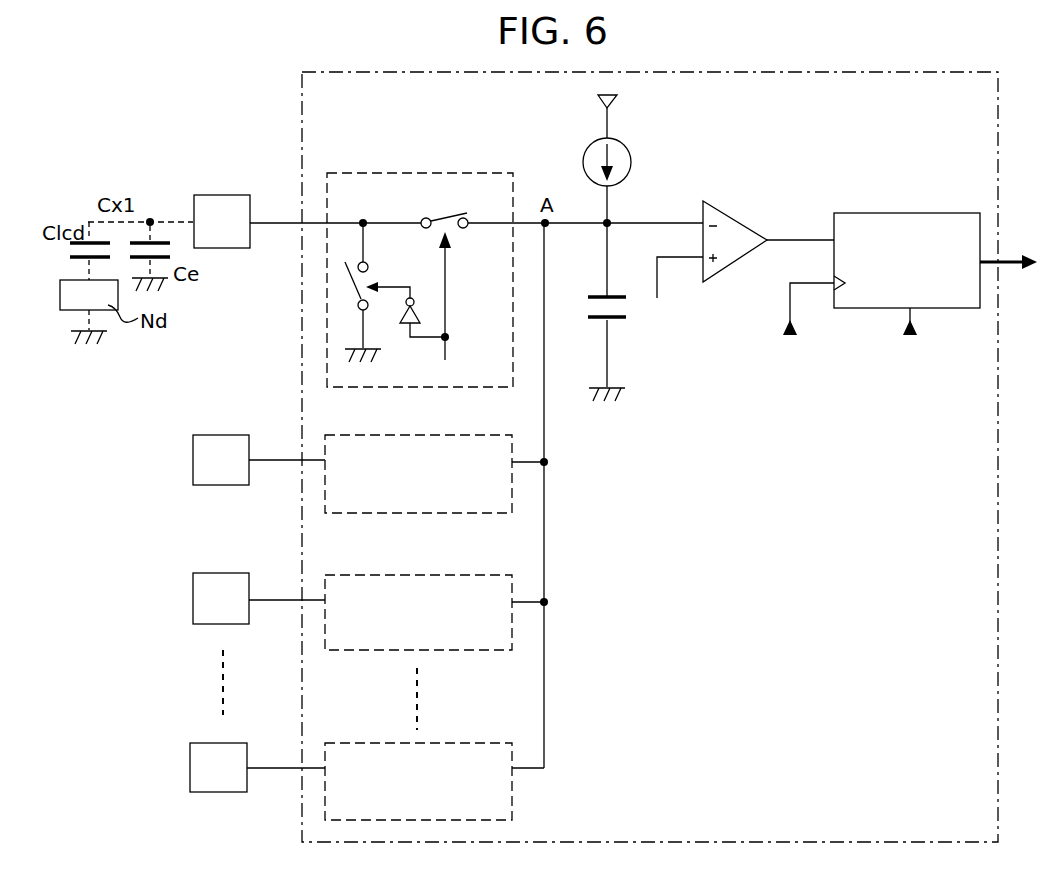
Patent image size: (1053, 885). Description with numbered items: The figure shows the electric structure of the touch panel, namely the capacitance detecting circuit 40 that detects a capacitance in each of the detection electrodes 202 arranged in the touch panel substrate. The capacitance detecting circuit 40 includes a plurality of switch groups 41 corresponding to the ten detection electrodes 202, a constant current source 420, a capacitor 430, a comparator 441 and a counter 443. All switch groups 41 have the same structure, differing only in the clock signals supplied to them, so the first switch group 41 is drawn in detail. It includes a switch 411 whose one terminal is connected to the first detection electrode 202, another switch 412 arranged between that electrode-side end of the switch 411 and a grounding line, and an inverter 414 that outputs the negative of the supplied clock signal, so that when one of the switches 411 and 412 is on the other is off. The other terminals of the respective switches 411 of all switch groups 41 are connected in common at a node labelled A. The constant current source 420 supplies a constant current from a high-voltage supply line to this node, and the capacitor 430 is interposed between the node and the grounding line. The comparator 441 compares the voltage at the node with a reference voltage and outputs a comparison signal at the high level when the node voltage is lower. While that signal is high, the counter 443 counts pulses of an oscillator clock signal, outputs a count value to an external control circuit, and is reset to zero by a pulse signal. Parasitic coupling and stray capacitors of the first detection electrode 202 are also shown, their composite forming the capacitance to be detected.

The capacitance detecting circuit 40 is at (300, 113).
The switch group 41 is at (370, 170).
The switch 411 is at (448, 217).
The switch 412 is at (398, 265).
The inverter 414 is at (410, 324).
The constant current source 420 is at (590, 148).
The capacitor 430 is at (598, 292).
The comparator 441 is at (734, 212).
The counter 443 is at (906, 212).
The detection electrode 202 is at (218, 232).